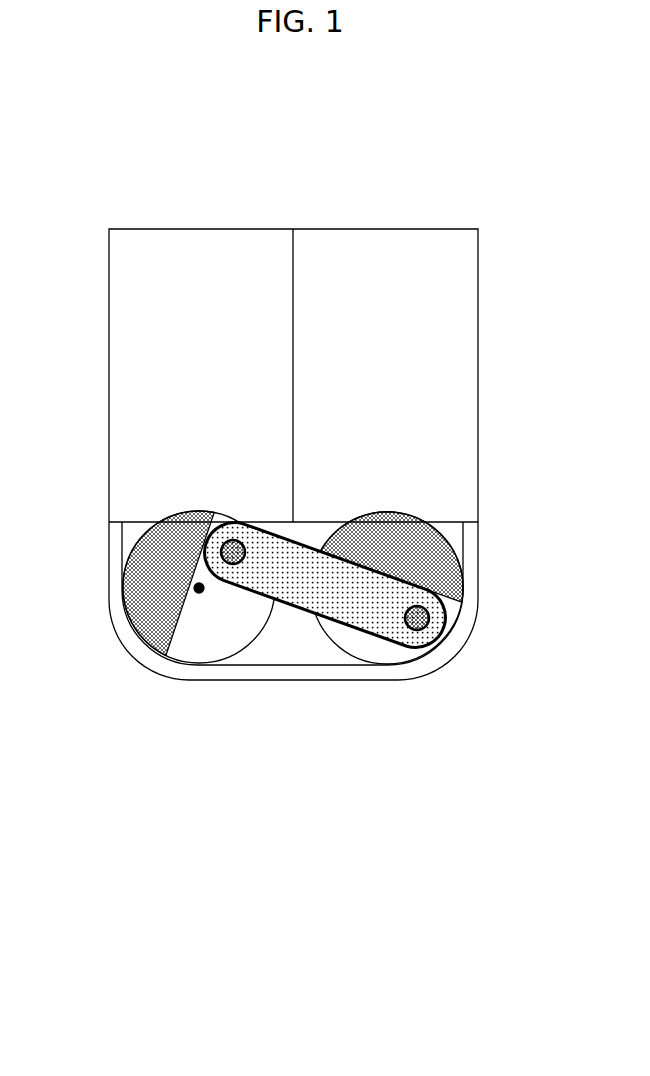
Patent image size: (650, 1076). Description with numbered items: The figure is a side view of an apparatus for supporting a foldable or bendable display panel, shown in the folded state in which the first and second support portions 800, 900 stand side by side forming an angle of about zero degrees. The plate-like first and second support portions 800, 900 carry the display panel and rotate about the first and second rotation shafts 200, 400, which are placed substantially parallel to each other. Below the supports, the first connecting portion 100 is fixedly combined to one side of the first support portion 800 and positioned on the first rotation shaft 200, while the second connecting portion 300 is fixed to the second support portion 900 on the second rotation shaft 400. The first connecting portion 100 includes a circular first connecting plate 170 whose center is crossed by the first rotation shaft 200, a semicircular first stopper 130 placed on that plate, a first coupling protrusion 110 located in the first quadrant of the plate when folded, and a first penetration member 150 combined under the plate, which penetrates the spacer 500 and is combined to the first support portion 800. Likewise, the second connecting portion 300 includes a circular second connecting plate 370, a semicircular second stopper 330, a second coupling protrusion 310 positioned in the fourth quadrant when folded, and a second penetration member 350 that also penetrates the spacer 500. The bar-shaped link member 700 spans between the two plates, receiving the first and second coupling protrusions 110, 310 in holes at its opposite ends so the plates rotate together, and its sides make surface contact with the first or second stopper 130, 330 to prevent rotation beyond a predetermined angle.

The first connecting portion 100 is at (157, 723).
The first coupling protrusion 110 is at (233, 565).
The first stopper 130 is at (142, 617).
The first penetration member 150 is at (181, 889).
The first connecting plate 170 is at (195, 652).
The first rotation shaft 200 is at (195, 588).
The second connecting portion 300 is at (423, 724).
The second coupling protrusion 310 is at (421, 631).
The second stopper 330 is at (433, 548).
The second penetration member 350 is at (359, 889).
The second connecting plate 370 is at (370, 647).
The second rotation shaft 400 is at (389, 587).
The spacer 500 is at (460, 629).
The link member 700 is at (302, 612).
The first support portion 800 is at (216, 247).
The second support portion 900 is at (413, 247).